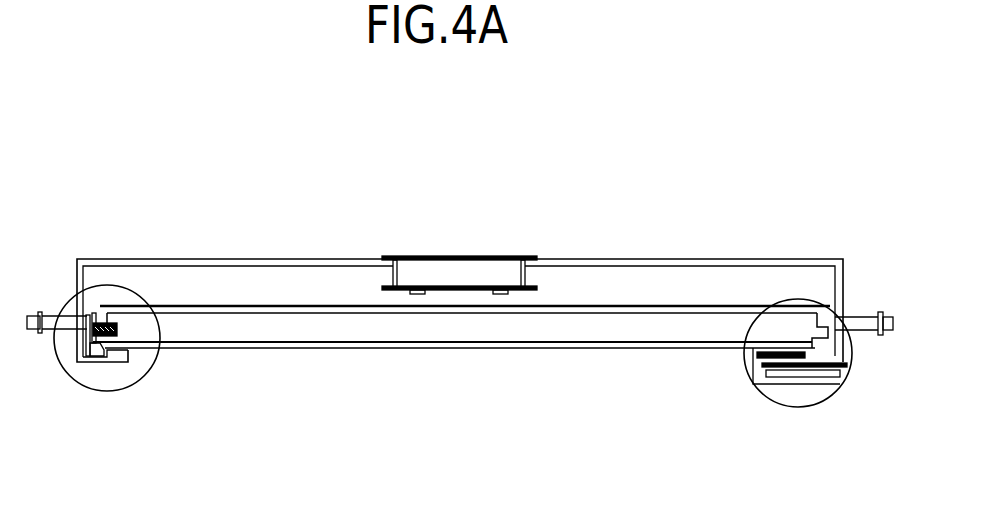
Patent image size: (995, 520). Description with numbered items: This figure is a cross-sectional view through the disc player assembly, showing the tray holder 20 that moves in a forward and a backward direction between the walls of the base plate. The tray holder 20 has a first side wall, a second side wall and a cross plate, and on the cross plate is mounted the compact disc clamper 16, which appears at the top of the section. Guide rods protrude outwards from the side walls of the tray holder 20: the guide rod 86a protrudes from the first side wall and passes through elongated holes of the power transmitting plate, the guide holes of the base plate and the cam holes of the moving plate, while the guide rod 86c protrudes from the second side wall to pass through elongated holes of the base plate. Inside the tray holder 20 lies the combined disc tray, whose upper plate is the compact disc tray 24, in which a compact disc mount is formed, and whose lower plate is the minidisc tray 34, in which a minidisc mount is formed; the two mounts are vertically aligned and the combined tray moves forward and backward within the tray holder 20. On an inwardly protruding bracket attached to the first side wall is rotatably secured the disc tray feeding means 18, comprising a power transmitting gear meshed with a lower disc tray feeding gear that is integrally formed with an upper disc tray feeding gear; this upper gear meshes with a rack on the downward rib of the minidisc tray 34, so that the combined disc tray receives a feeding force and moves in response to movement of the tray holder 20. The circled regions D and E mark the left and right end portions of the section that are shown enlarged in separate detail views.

The tray holder 20 is at (275, 260).
The compact disc clamper 16 is at (478, 256).
The compact disc tray 24 is at (342, 306).
The minidisc tray 34 is at (443, 348).
The guide rod 86c is at (50, 316).
The guide rod 86a is at (861, 317).
The disc tray feeding means 18 is at (825, 405).
The detail circle D is at (147, 381).
The detail circle E is at (775, 402).